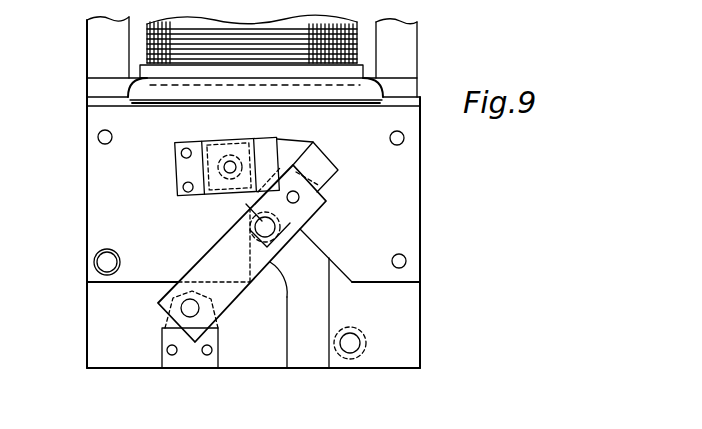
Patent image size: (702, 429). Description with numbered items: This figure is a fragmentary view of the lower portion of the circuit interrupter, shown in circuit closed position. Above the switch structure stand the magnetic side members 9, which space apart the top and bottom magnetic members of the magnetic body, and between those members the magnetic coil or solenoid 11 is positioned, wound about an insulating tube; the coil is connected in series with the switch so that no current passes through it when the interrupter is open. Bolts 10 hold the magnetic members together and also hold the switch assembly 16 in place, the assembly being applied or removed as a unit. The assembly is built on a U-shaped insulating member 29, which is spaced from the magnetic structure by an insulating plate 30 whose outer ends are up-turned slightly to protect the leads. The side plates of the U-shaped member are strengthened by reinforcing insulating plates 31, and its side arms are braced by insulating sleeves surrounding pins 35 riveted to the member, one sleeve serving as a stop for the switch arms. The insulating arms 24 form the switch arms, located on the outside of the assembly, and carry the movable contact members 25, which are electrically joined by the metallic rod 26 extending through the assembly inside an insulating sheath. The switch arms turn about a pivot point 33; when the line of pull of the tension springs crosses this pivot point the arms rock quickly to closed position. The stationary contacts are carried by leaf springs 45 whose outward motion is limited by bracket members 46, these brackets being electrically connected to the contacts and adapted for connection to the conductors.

The magnetic side members 9 is at (87, 53).
The bolts 10 is at (146, 110).
The magnetic coil or solenoid 11 is at (87, 33).
The switch assembly 16 is at (82, 193).
The insulating arms 24 is at (224, 244).
The movable contact members 25 is at (322, 172).
The metallic rod 26 is at (284, 199).
The U-shaped insulating member 29 is at (413, 305).
The insulating plate 30 is at (232, 92).
The reinforcing insulating plates 31 is at (406, 205).
The pivot point of the switch arms 33 is at (185, 307).
The pins 35 is at (100, 262).
The leaf springs 45 is at (284, 140).
The bracket members 46 is at (265, 148).